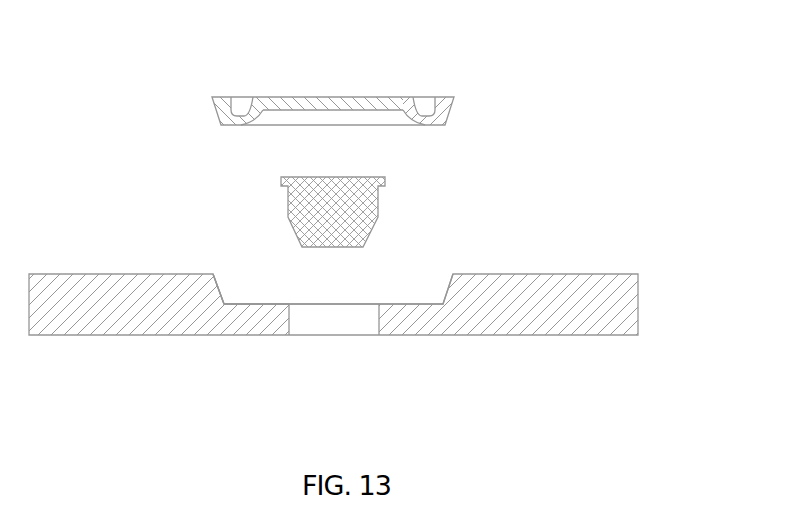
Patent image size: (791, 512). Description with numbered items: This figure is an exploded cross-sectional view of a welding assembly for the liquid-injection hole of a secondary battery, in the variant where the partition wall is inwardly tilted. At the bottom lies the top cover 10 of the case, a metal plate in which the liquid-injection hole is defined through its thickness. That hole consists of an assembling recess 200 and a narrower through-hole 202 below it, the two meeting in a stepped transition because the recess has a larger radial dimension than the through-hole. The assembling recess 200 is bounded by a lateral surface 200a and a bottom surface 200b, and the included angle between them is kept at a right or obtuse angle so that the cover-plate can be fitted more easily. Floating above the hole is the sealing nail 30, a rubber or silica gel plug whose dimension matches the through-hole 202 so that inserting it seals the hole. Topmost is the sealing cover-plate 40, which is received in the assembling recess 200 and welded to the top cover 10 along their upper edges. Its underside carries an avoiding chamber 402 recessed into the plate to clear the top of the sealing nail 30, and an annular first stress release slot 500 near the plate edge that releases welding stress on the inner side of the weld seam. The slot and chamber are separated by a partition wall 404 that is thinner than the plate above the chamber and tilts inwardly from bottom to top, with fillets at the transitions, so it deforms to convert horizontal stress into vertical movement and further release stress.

The top cover 10 is at (532, 295).
The assembling recess 200 is at (297, 293).
The lateral surface 200a is at (218, 296).
The bottom surface 200b is at (242, 305).
The through-hole 202 is at (338, 325).
The sealing nail 30 is at (366, 214).
The sealing cover-plate 40 is at (448, 101).
The avoiding chamber 402 is at (354, 116).
The partition wall 404 is at (261, 104).
The first stress release slot 500 is at (238, 108).